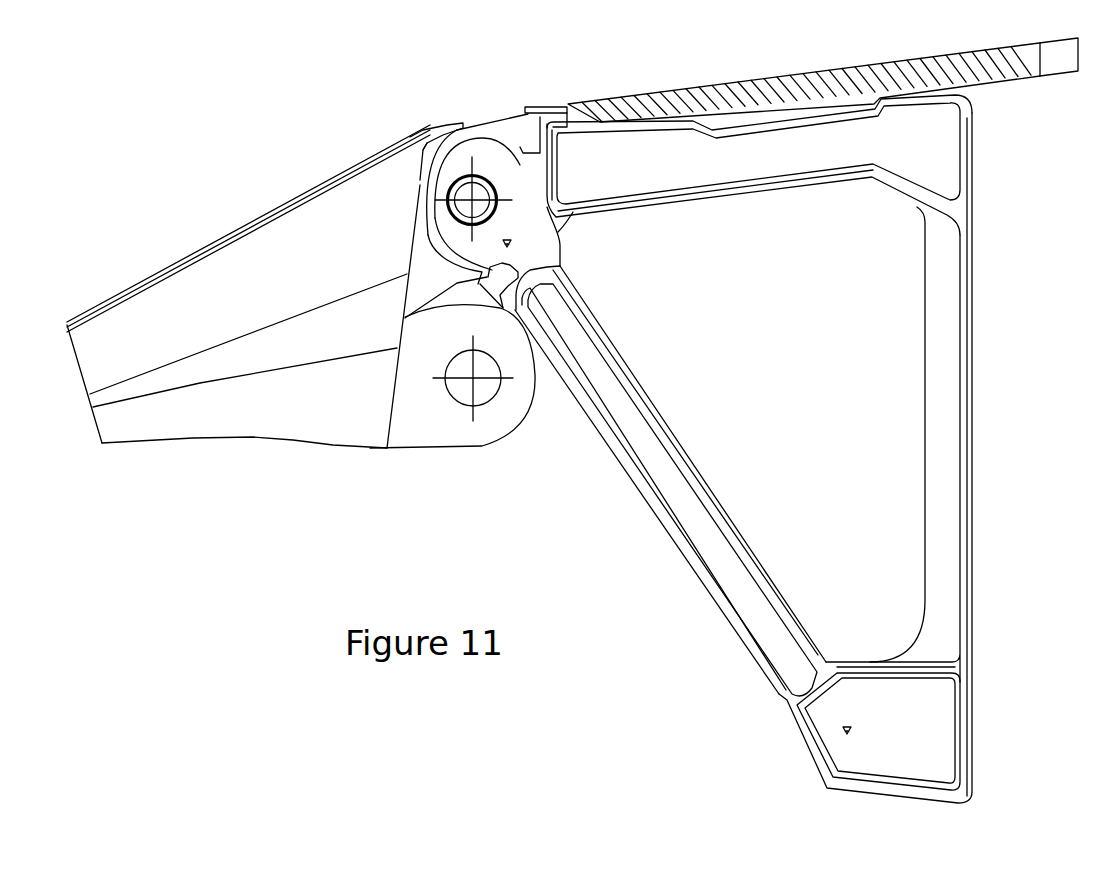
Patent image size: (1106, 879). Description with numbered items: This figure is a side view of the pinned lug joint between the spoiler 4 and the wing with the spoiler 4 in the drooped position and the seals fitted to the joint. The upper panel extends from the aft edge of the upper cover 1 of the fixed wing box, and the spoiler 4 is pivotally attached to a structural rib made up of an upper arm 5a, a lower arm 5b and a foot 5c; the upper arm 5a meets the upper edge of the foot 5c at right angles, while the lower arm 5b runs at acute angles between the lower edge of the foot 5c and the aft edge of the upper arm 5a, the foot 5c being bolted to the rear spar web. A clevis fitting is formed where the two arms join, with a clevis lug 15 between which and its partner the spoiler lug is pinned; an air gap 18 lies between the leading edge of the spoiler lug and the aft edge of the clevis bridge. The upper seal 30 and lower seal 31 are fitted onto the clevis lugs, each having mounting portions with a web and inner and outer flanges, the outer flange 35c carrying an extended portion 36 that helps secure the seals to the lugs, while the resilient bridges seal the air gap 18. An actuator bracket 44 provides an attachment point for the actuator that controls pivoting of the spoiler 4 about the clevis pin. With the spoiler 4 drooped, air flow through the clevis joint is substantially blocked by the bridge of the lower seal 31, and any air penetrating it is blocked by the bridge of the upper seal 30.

The upper cover 1 is at (740, 90).
The spoiler 4 is at (188, 275).
The upper arm 5a is at (750, 152).
The lower arm 5b is at (660, 500).
The foot 5c is at (952, 310).
The clevis lug 15 is at (549, 231).
The air gap 18 is at (455, 203).
The upper seal 30 is at (480, 116).
The lower seal 31 is at (489, 302).
The outer flange 35c is at (472, 137).
The extended portion 36 is at (530, 137).
The actuator bracket 44 is at (425, 412).